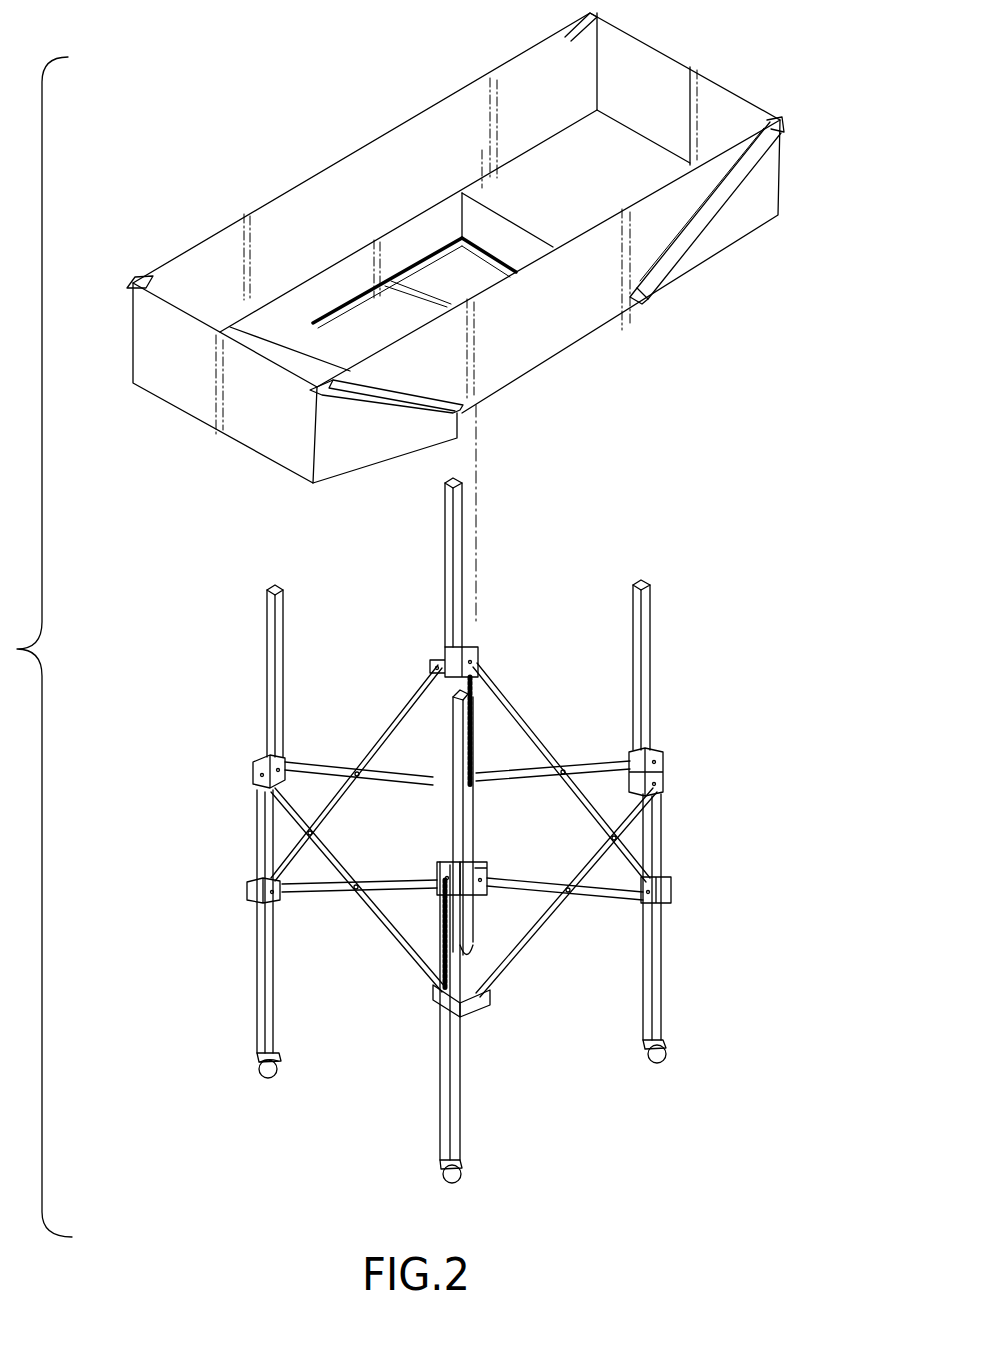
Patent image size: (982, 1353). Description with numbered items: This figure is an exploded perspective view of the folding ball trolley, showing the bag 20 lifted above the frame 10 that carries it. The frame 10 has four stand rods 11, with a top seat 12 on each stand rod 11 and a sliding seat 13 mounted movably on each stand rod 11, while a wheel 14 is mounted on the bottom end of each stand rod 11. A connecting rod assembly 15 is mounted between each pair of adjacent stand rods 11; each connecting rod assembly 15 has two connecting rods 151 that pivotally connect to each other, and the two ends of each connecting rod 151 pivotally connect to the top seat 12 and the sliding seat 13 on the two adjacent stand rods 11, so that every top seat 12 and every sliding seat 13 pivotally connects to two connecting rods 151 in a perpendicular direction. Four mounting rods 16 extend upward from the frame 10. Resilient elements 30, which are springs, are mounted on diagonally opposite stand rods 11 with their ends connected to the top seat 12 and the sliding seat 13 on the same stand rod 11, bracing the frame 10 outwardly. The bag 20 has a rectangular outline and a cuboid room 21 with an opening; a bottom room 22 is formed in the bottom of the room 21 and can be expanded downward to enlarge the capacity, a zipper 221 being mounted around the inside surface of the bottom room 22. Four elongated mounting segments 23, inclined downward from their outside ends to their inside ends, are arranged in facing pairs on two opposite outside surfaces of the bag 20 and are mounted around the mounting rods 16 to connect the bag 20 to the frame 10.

The frame 10 is at (230, 950).
The stand rod 11 is at (260, 996).
The top seat 12 is at (252, 779).
The sliding seat 13 is at (248, 889).
The wheel 14 is at (265, 1077).
The connecting rod assembly 15 is at (550, 736).
The connecting rod 151 is at (636, 760).
The mounting rod 16 is at (271, 675).
The bag 20 is at (176, 432).
The room 21 is at (246, 274).
The bottom room 22 is at (375, 266).
The zipper 221 is at (441, 249).
The mounting segment 23 is at (378, 400).
The resilient element 30 is at (468, 703).